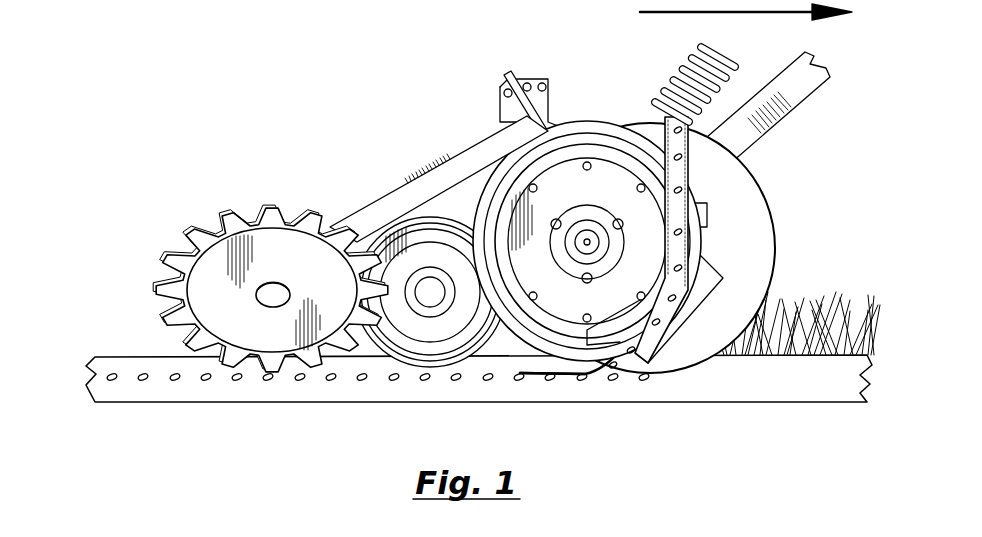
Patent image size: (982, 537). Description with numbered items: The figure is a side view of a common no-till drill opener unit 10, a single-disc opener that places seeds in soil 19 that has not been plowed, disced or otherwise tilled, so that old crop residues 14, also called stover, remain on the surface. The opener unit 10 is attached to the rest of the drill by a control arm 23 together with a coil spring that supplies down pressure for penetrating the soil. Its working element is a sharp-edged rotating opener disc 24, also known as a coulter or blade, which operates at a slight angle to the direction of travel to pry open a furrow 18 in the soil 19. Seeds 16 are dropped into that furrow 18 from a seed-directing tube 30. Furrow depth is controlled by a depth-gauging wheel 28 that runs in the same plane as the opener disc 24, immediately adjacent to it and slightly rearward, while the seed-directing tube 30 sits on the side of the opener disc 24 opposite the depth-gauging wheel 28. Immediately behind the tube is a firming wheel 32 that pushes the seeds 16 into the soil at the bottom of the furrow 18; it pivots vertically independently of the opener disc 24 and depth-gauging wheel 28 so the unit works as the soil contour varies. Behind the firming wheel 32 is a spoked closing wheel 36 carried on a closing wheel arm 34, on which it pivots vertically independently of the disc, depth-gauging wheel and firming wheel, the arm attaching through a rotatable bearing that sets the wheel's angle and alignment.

The no-till drill opener unit 10 is at (426, 45).
The old crop residues 14 is at (810, 280).
The seeds 16 is at (298, 381).
The furrow 18 is at (539, 372).
The soil 19 is at (819, 392).
The control arm 23 is at (797, 93).
The opener disc 24 is at (715, 337).
The depth-gauging wheel 28 is at (602, 138).
The seed-directing tube 30 is at (700, 163).
The firming wheel 32 is at (427, 372).
The closing wheel arm 34 is at (418, 195).
The closing wheel 36 is at (222, 208).